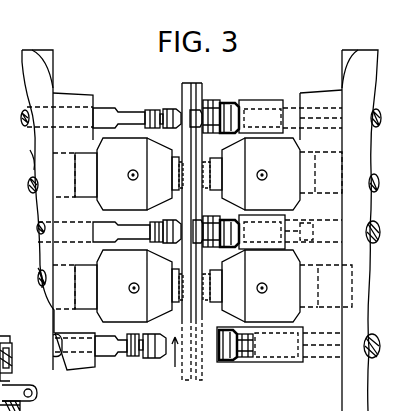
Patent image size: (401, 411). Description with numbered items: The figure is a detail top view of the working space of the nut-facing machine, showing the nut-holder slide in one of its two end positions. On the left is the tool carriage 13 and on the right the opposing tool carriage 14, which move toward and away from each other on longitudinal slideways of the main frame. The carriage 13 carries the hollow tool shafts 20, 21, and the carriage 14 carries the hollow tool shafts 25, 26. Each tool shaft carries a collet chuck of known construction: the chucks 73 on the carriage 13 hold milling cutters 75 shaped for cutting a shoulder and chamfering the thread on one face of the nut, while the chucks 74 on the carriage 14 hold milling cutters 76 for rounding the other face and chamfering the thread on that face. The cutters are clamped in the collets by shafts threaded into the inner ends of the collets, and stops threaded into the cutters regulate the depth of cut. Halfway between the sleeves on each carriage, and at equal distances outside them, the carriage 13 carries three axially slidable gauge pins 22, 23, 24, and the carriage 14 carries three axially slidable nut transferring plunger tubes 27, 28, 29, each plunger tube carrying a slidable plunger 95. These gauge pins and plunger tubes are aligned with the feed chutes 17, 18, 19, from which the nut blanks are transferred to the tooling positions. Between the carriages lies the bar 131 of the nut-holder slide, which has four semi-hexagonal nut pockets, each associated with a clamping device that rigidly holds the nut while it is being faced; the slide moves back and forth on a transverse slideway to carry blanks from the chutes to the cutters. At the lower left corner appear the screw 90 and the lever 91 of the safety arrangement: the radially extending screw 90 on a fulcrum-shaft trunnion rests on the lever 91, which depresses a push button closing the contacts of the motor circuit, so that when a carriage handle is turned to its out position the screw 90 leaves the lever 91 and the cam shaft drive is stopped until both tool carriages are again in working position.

The tool carriage 13 is at (55, 79).
The tool carriage 14 is at (340, 80).
The bar 131 is at (181, 86).
The gauge pin 22 is at (110, 109).
The gauge pin 23 is at (99, 222).
The gauge pin 24 is at (97, 355).
The plunger 95 is at (212, 101).
The feed chute 17 is at (231, 103).
The feed chute 18 is at (222, 218).
The feed chute 19 is at (228, 362).
The nut transferring plunger tube 27 is at (263, 100).
The nut transferring plunger tube 28 is at (290, 232).
The nut transferring plunger tube 29 is at (272, 362).
The collet chuck 73 is at (107, 140).
The milling cutter 75 is at (151, 150).
The collet chuck 74 is at (255, 142).
The milling cutter 76 is at (224, 146).
The tool shaft 25 is at (321, 172).
The tool shaft 26 is at (326, 286).
The tool shaft 20 is at (36, 160).
The tool shaft 21 is at (40, 272).
The screw 90 is at (13, 365).
The lever 91 is at (37, 399).